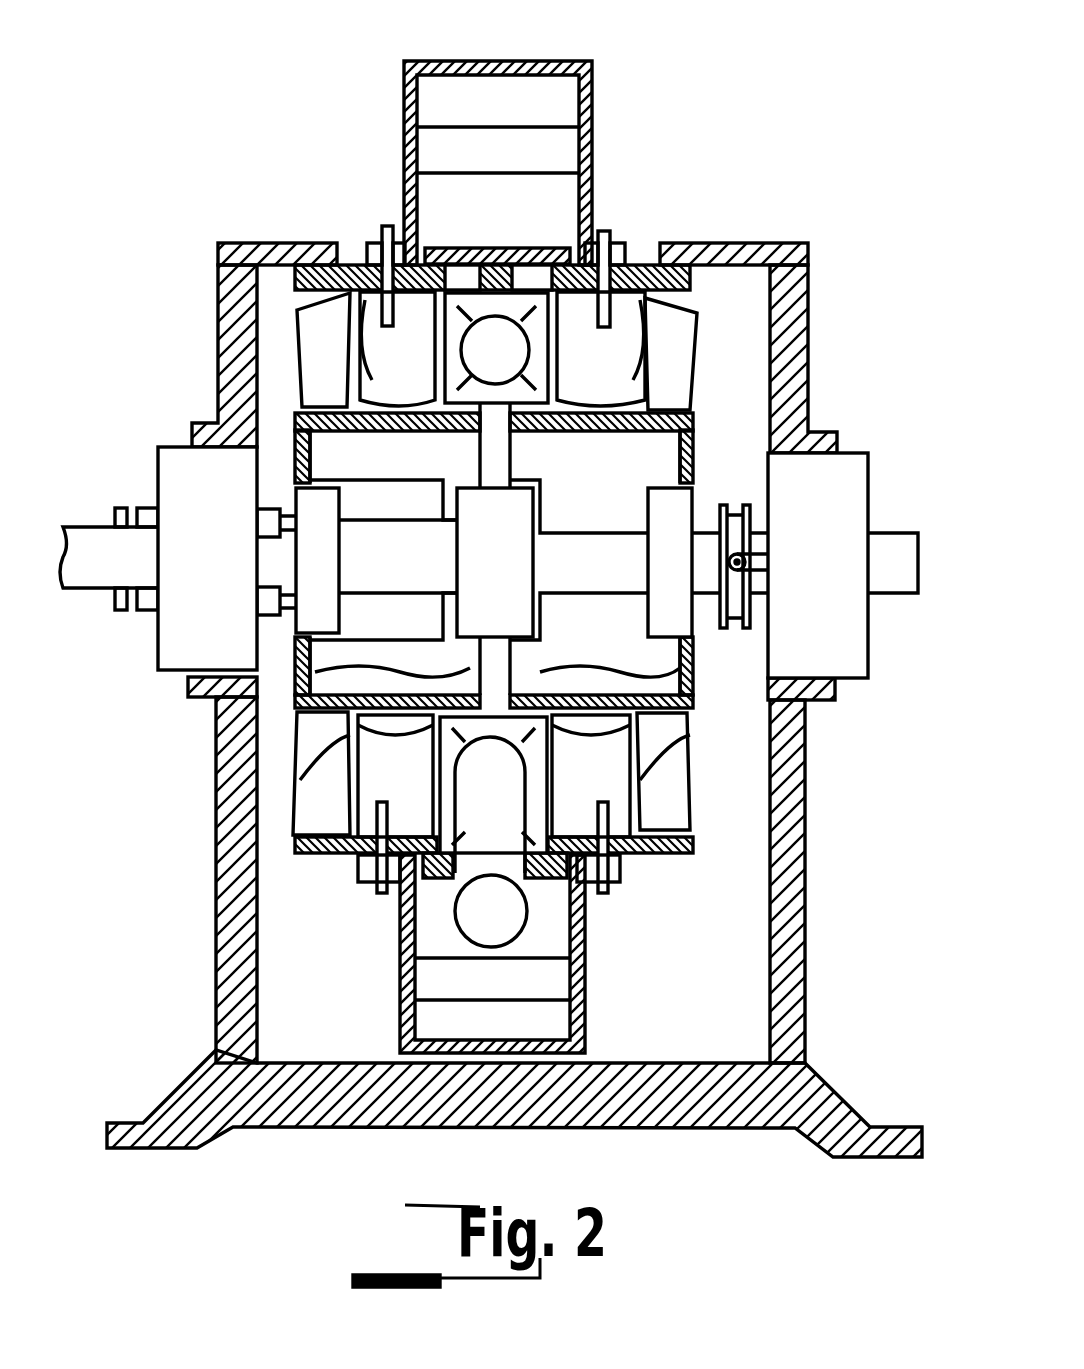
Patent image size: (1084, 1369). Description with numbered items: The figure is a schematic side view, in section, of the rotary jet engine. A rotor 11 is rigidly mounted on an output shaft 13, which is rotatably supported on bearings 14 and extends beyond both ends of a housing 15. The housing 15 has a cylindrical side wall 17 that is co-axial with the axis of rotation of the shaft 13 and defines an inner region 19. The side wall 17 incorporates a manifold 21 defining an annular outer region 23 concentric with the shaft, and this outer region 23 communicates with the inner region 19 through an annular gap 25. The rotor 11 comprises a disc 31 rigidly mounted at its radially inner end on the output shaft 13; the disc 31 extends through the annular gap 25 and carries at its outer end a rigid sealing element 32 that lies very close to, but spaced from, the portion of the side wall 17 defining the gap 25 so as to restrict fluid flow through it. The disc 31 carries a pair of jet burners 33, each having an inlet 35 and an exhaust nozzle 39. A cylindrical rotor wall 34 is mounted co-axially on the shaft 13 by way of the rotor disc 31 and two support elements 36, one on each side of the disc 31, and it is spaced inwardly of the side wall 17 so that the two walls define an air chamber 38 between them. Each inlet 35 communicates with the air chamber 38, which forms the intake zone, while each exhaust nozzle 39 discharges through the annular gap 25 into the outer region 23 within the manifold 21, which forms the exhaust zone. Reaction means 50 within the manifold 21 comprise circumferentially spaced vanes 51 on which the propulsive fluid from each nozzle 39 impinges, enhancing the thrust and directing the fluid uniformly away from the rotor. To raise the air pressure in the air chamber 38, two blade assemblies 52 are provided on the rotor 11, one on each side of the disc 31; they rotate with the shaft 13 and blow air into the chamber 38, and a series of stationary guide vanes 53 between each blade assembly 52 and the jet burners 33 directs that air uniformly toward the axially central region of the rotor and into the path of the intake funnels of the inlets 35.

The rotor 11 is at (693, 415).
The output shaft 13 is at (905, 531).
The bearings 14 is at (167, 473).
The housing 15 is at (765, 238).
The cylindrical side wall 17 is at (722, 247).
The inner region 19 is at (756, 283).
The manifold 21 is at (592, 58).
The annular outer region 23 is at (447, 97).
The annular gap 25 is at (460, 280).
The disc 31 is at (307, 673).
The rigid sealing element 32 is at (552, 240).
The jet burners 33 is at (443, 357).
The cylindrical rotor wall 34 is at (838, 432).
The inlet 35 is at (557, 400).
The support elements 36 is at (300, 662).
The air chamber 38 is at (300, 393).
The exhaust nozzle 39 is at (472, 915).
The reaction means 50 is at (478, 124).
The vanes 51 is at (537, 993).
The blade assemblies 52 is at (323, 390).
The stationary guide vanes 53 is at (317, 247).